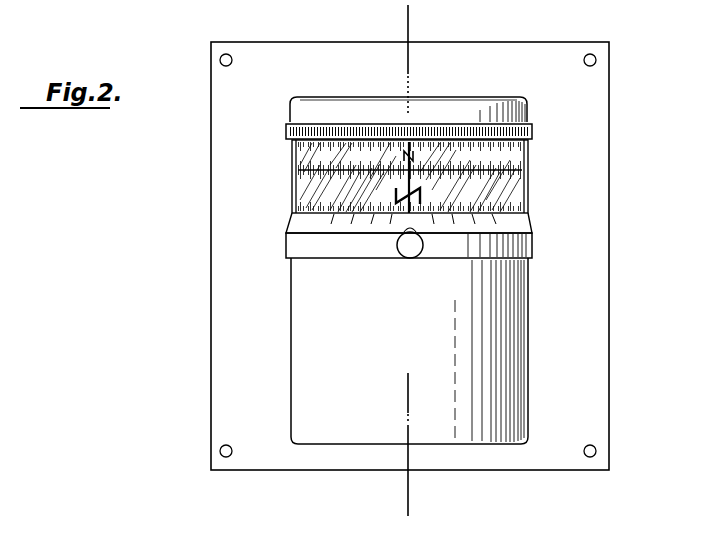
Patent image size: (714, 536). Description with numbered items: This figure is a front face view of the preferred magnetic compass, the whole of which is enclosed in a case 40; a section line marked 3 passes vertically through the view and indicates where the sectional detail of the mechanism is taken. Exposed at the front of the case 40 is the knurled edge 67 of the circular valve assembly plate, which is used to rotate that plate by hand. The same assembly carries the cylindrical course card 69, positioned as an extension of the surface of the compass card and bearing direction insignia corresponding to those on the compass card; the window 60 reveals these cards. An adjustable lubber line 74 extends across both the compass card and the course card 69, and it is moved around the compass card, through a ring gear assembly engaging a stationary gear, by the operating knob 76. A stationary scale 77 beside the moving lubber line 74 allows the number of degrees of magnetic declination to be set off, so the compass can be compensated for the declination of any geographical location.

The section line 3- 3 is at (412, 22).
The case 40 is at (387, 343).
The window glass 60 is at (505, 196).
The knurled edge 67 is at (532, 132).
The course card 69 is at (510, 161).
The adjustable lubber line 74 is at (412, 172).
The operating knob 76 is at (410, 246).
The stationary scale 77 is at (388, 217).